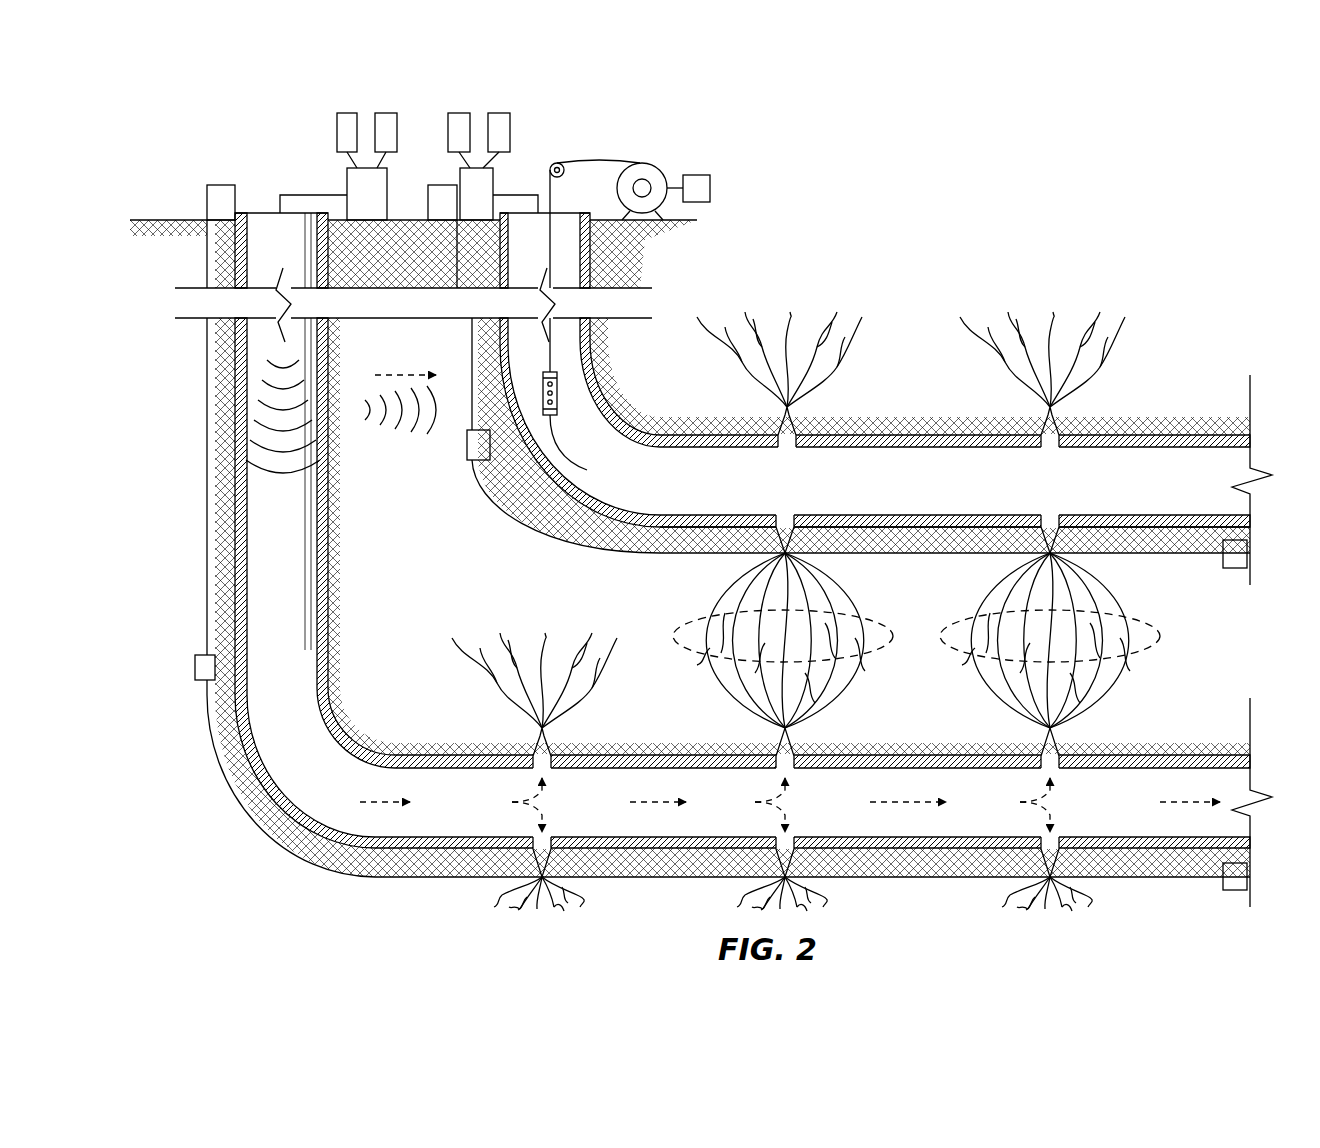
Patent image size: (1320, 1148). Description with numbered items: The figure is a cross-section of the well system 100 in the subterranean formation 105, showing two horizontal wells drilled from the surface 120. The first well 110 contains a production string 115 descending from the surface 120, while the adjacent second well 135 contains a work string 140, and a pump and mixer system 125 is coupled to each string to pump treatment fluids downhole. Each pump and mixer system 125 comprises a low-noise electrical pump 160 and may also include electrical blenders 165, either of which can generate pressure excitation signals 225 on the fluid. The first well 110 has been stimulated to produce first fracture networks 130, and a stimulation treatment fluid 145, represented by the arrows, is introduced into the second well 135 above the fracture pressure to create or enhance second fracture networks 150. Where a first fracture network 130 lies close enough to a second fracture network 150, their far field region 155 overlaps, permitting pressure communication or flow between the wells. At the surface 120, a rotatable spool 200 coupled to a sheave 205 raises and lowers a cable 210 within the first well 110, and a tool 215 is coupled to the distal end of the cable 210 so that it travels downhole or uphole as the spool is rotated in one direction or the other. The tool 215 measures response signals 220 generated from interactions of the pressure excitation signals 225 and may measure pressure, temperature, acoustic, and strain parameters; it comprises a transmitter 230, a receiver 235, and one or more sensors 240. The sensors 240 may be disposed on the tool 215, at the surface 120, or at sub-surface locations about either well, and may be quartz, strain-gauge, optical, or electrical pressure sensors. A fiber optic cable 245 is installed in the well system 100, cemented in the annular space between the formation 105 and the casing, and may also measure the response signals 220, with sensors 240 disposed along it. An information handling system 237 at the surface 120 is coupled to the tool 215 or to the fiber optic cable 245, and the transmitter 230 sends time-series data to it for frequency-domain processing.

The well system 100 is at (1202, 122).
The subterranean formation 105 is at (386, 366).
The first well 110 is at (640, 542).
The production string 115 is at (588, 487).
The surface 120 is at (195, 220).
The pump and mixer system 125 is at (343, 188).
The first fracture networks 130 is at (858, 298).
The second well 135 is at (237, 642).
The work string 140 is at (258, 552).
The stimulation treatment fluid 145 is at (380, 800).
The second fracture networks 150 is at (602, 697).
The far field region 155 is at (685, 625).
The electrical pump 160 is at (345, 113).
The electrical blenders 165 is at (387, 113).
The rotatable spool 200 is at (645, 165).
The sheave 205 is at (563, 165).
The cable 210 is at (525, 247).
The tool 215 is at (562, 383).
The response signals 220 is at (400, 415).
The pressure excitation signals 225 is at (250, 405).
The transmitter 230 is at (543, 373).
The receiver 235 is at (589, 469).
The information handling system 237 is at (721, 171).
The sensors 240 is at (207, 185).
The fiber optic cable 245 is at (215, 785).